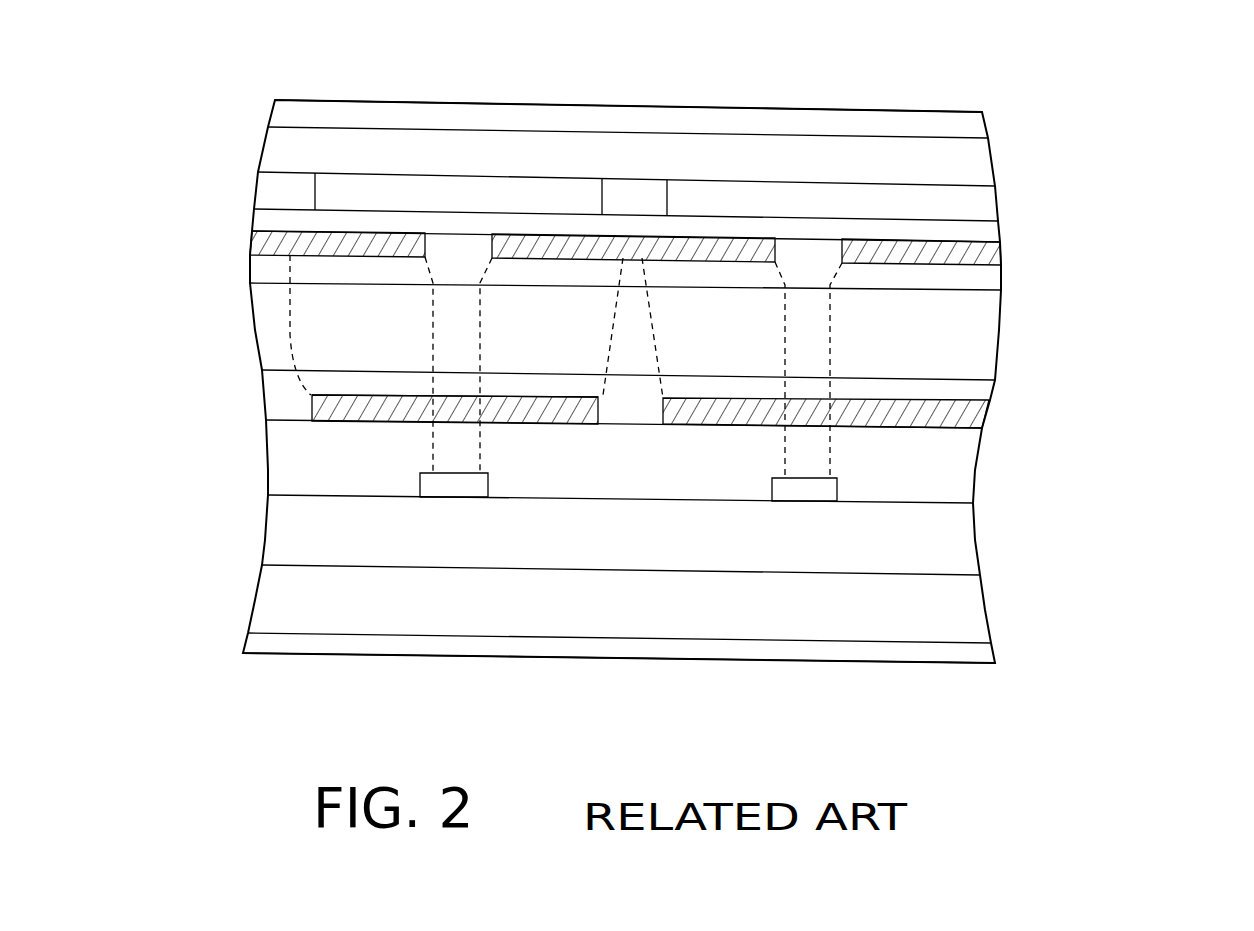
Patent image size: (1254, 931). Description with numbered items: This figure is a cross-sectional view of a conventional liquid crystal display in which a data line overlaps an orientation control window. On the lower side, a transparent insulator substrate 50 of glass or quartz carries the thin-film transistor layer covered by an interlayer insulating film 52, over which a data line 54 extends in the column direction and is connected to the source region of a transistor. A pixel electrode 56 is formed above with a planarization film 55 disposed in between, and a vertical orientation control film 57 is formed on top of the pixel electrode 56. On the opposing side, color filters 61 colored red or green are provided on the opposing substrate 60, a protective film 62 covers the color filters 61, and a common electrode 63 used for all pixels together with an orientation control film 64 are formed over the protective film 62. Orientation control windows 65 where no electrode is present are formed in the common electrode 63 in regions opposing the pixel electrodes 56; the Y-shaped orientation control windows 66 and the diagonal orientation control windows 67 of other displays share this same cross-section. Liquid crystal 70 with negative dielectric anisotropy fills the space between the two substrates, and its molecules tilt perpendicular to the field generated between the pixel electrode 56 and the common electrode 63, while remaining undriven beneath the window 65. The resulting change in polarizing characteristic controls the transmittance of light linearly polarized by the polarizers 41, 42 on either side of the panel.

The polarizer 42 is at (972, 127).
The substrate 60 is at (977, 165).
The color filters 61 is at (979, 207).
The protective film 62 is at (976, 232).
The common electrode 63 is at (985, 258).
The orientation control film 64 is at (980, 278).
The liquid crystal 70 is at (965, 348).
The vertical orientation control film 57 is at (968, 392).
The pixel electrode 56 is at (563, 412).
The planarization film 55 is at (952, 467).
The data line 54 is at (452, 485).
The interlayer insulating film 52 is at (952, 537).
The transparent insulator substrate 50 is at (950, 607).
The polarizer 41 is at (975, 653).
The orientation control window 65 is at (459, 246).
The orientation control windows 66 is at (676, 326).
The orientation control windows 67 is at (717, 328).